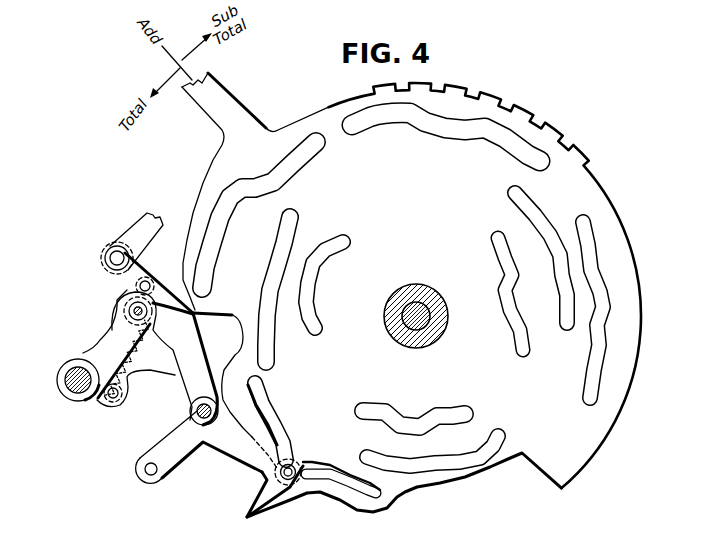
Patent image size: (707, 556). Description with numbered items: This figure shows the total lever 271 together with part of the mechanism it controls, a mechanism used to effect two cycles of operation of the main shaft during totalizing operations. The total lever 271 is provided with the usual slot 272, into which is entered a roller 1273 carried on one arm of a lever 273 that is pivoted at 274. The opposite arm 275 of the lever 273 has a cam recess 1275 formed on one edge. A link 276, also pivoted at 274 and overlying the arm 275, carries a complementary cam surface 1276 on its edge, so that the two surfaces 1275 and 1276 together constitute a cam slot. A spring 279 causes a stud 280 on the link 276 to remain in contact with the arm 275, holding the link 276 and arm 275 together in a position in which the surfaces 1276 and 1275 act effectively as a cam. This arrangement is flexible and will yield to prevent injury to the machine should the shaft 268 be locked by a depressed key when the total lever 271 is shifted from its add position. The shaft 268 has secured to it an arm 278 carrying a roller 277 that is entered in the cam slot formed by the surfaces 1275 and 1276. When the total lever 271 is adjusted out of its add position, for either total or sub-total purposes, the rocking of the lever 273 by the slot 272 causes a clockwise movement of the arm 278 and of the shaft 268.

The total lever 271 is at (222, 96).
The slot 272 is at (272, 406).
The lever 273 is at (227, 437).
The pivot 274 is at (197, 412).
The arm 275 is at (112, 310).
The link 276 is at (120, 278).
The roller 277 is at (130, 290).
The arm 278 is at (90, 353).
The spring 279 is at (123, 337).
The stud 280 is at (157, 278).
The shaft 268 is at (77, 394).
The roller 1273 is at (300, 464).
The cam recess 1275 is at (136, 388).
The cam surface 1276 is at (195, 315).